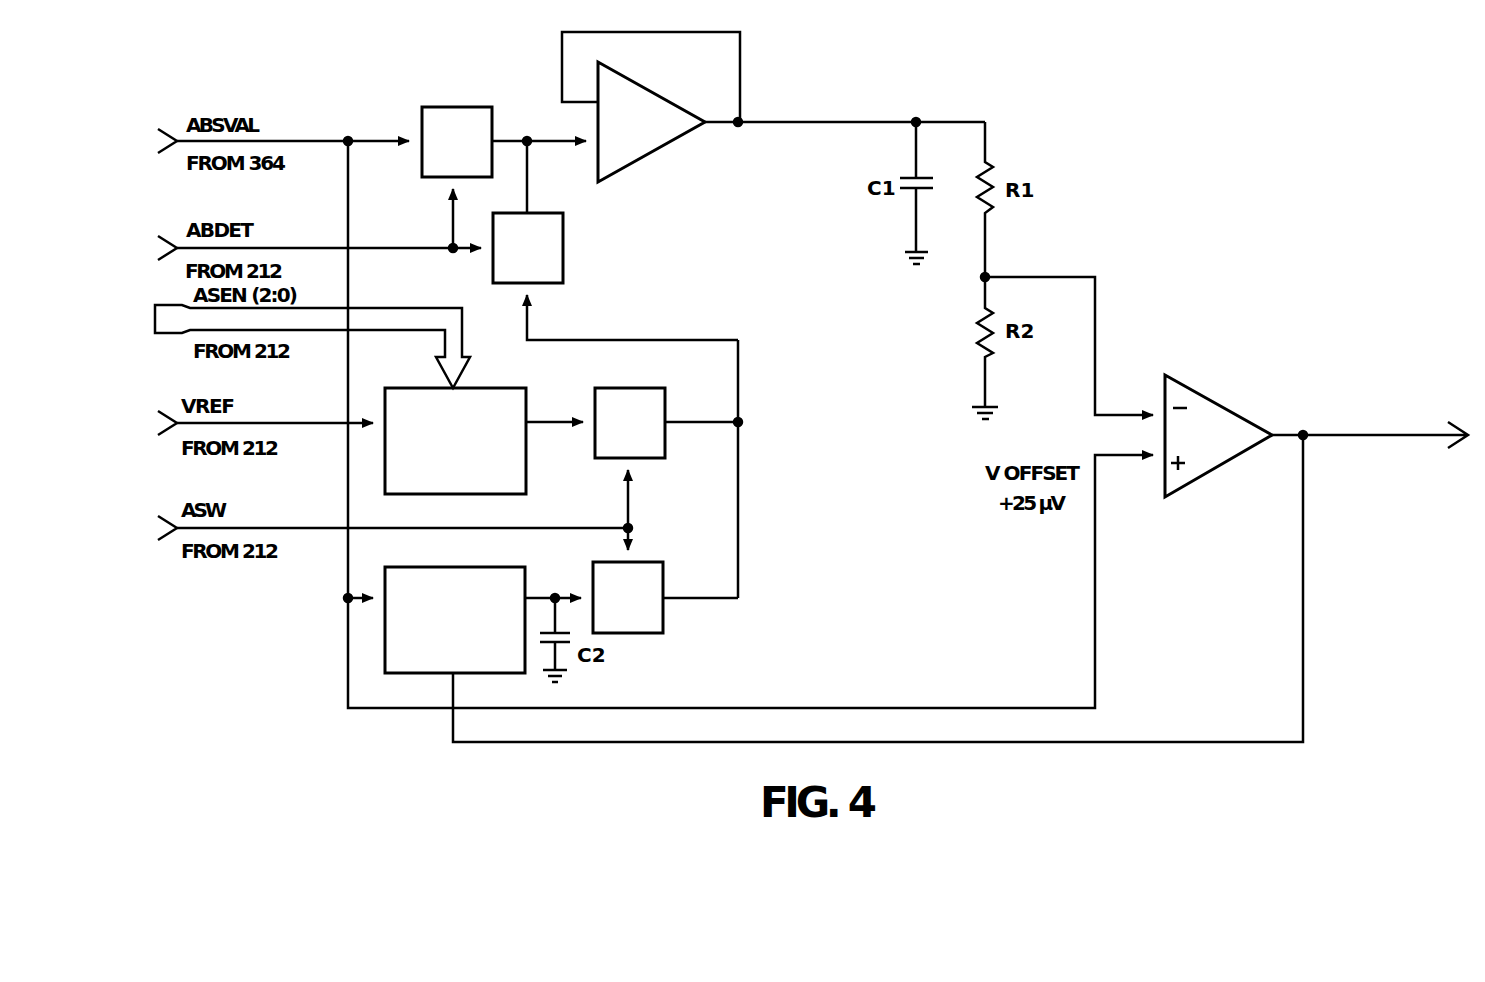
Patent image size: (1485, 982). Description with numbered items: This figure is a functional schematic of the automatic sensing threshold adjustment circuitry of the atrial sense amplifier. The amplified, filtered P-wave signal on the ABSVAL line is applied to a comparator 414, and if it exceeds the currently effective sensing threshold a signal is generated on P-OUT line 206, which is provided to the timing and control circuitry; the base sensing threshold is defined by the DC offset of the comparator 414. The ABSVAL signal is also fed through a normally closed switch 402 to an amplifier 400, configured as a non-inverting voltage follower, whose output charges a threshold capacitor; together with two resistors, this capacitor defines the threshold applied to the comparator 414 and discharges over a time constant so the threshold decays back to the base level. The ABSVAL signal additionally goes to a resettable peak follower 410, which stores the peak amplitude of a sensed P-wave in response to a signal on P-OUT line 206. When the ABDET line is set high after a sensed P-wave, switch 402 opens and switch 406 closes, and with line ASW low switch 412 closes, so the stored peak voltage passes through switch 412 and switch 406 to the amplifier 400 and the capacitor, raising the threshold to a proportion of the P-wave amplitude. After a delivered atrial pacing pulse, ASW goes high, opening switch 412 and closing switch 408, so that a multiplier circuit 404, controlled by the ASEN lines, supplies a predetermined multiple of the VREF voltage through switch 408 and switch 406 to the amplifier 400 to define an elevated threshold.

The amplifier 400 is at (645, 87).
The switch 402 is at (455, 107).
The multiplier circuit 404 is at (508, 388).
The switch 406 is at (563, 250).
The switch 408 is at (645, 458).
The resettable peak follower 410 is at (500, 567).
The switch 412 is at (655, 562).
The comparator 414 is at (1215, 398).
The P-OUT line 206 is at (1383, 436).